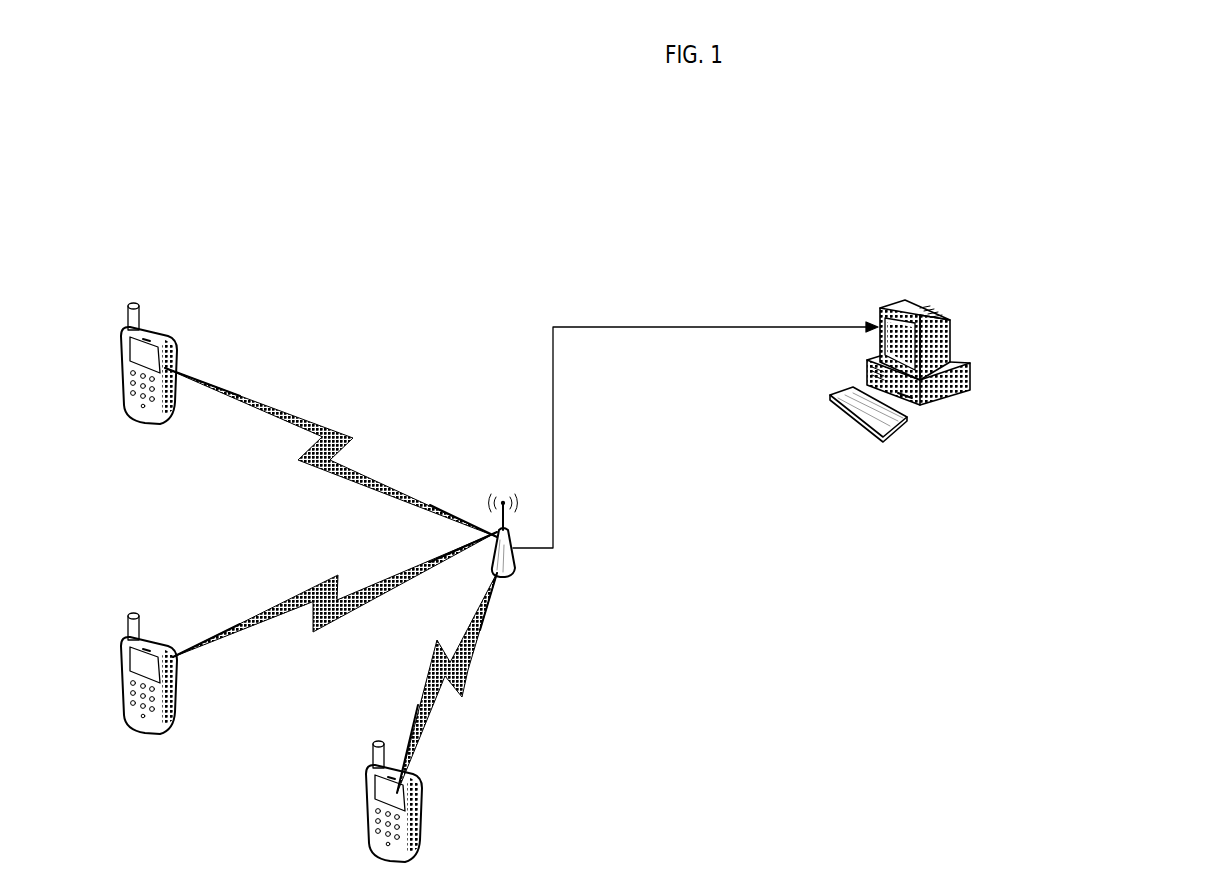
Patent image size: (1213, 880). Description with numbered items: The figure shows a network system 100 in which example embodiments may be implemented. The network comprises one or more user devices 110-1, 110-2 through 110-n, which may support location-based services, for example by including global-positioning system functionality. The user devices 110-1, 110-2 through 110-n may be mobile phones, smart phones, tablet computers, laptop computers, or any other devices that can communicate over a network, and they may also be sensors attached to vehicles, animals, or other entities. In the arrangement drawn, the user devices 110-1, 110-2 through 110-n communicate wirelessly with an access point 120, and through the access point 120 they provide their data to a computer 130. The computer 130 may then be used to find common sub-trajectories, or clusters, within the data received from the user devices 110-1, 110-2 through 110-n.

The system 100 is at (1024, 208).
The user device 110-1 is at (165, 330).
The user device 110-2 is at (165, 640).
The user device 110-n is at (423, 777).
The access point 120 is at (503, 498).
The computer 130 is at (933, 310).